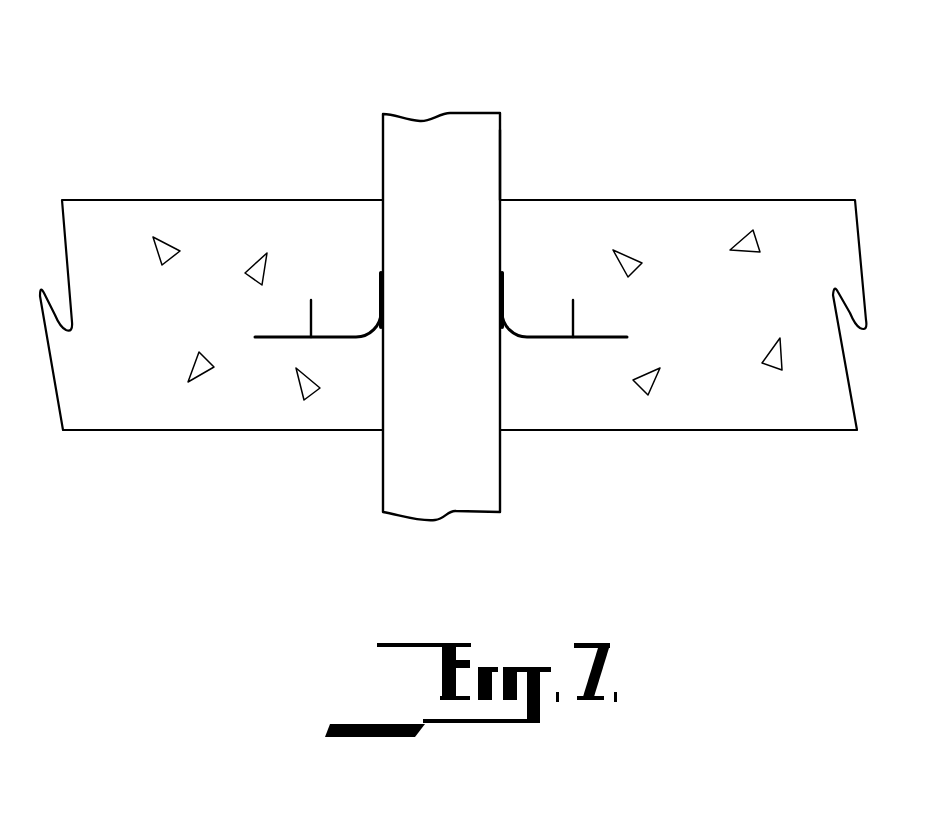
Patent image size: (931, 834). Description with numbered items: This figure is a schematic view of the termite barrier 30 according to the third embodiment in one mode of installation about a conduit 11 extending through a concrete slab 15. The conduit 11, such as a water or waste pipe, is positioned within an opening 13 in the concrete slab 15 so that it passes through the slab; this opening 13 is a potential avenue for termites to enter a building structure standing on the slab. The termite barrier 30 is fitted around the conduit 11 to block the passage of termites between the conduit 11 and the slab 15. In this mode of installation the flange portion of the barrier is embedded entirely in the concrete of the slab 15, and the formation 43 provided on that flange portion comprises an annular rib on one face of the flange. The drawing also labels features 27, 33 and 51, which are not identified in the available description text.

The conduit 11 is at (503, 138).
The opening 13 is at (507, 165).
The concrete slab 15 is at (750, 201).
The second clip 27 is at (552, 339).
The termite barrier 30 is at (271, 338).
The upstanding flange of second clip 33 is at (505, 302).
The formation 43 is at (574, 322).
The leg of first clip 51 is at (308, 315).